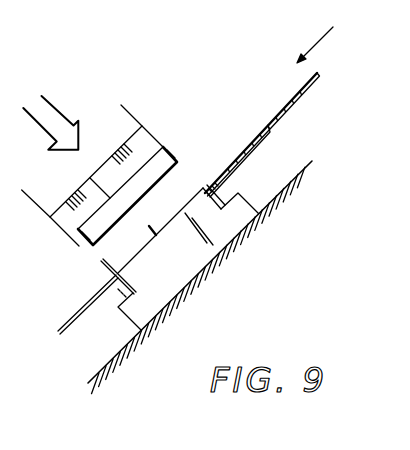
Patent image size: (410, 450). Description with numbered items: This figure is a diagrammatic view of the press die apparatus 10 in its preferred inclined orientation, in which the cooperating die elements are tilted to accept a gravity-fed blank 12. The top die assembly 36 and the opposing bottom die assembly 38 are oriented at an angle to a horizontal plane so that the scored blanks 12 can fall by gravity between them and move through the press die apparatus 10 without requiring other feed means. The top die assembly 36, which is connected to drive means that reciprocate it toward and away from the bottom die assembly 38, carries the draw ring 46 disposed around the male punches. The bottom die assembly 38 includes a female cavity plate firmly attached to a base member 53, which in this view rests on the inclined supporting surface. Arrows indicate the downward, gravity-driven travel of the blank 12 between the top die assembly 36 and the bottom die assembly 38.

The press die apparatus 10 is at (207, 58).
The blank 12 is at (278, 113).
The top die assembly 36 is at (140, 110).
The bottom die assembly 38 is at (117, 322).
The draw ring 46 is at (165, 152).
The base member 53 is at (243, 203).